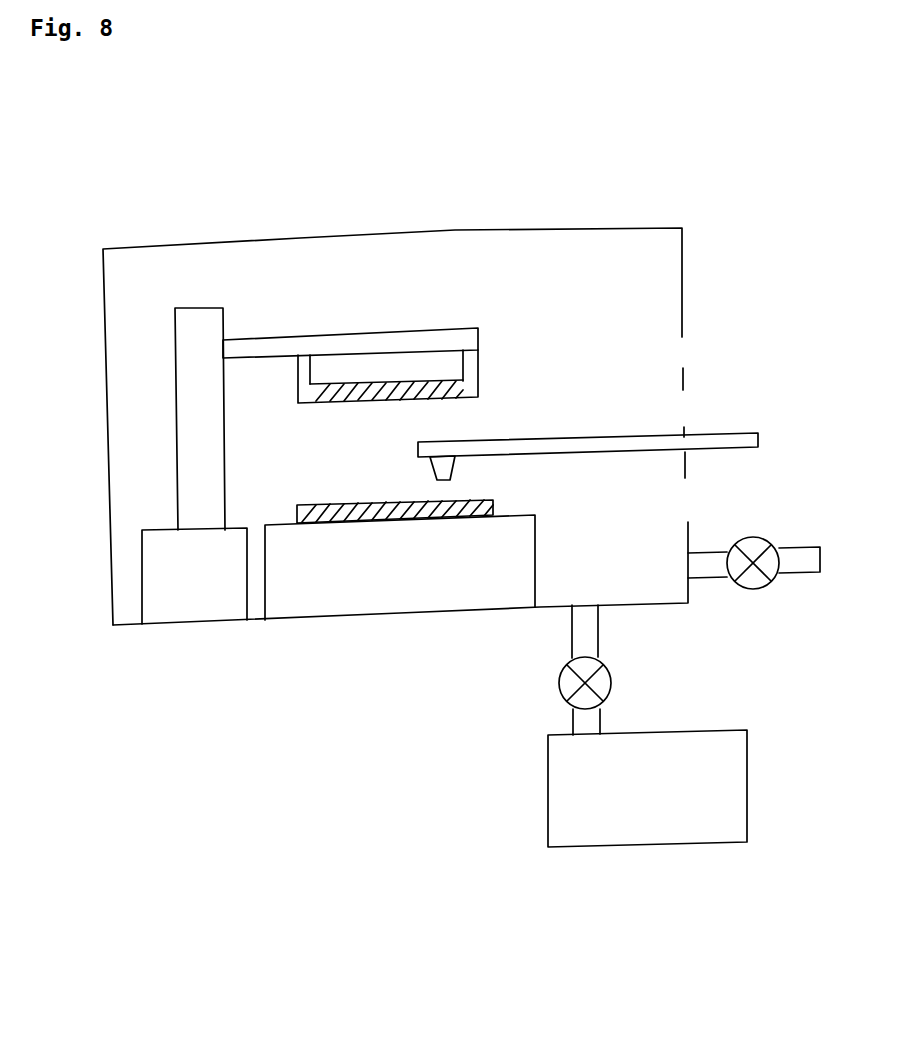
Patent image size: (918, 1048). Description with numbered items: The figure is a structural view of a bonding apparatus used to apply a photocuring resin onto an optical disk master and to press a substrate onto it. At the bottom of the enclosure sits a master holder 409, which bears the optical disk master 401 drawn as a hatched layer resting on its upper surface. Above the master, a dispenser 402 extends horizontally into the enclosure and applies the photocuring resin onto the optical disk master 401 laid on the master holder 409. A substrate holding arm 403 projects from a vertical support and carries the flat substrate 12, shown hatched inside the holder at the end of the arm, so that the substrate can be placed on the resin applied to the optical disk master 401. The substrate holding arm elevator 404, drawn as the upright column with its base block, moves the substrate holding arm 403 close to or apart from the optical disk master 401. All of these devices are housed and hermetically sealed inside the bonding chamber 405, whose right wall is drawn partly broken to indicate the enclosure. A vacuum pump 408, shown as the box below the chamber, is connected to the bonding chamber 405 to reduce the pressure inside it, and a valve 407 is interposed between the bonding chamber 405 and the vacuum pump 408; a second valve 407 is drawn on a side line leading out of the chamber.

The flat substrate 12 is at (467, 403).
The optical disk master 401 is at (486, 498).
The dispenser 402 is at (508, 438).
The substrate holding arm 403 is at (303, 332).
The substrate holding arm elevator 404 is at (187, 307).
The bonding chamber 405 is at (455, 230).
The valve 407 is at (752, 600).
The vacuum pump 408 is at (548, 815).
The master holder 409 is at (375, 590).